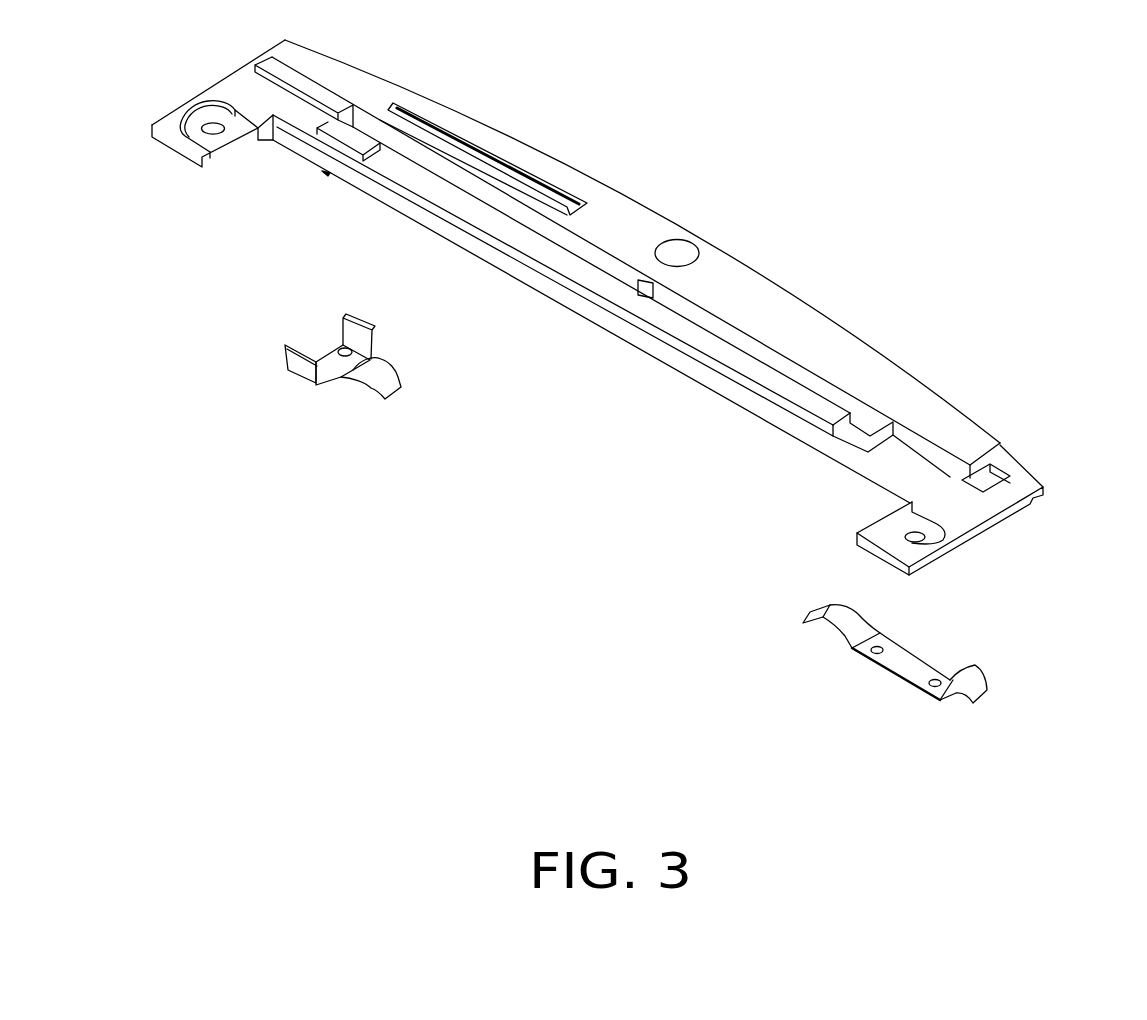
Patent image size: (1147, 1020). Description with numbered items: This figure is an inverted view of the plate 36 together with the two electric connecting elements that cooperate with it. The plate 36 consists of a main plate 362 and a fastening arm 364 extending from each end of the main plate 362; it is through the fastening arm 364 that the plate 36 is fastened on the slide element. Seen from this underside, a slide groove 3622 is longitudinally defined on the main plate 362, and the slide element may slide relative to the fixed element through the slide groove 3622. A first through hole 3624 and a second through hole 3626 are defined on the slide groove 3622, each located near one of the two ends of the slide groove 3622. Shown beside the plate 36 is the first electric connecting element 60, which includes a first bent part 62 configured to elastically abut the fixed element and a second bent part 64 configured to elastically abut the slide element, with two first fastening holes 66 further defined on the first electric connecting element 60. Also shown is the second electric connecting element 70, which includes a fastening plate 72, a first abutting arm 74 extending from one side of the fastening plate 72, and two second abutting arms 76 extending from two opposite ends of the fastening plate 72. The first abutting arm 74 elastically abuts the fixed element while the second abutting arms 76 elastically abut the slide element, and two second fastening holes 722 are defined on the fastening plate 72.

The plate 36 is at (637, 307).
The main plate 362 is at (605, 271).
The slide groove 3622 is at (710, 342).
The first through hole 3624 is at (860, 437).
The second through hole 3626 is at (391, 168).
The fastening arm 364 is at (962, 518).
The first electric connecting element 60 is at (892, 664).
The first bent part 62 is at (843, 627).
The second bent part 64 is at (970, 685).
The first fastening holes 66 is at (878, 650).
The second electric connecting element 70 is at (316, 322).
The fastening plate 72 is at (328, 355).
The second fastening holes 722 is at (346, 350).
The first abutting arm 74 is at (375, 377).
The second abutting arms 76 is at (365, 340).